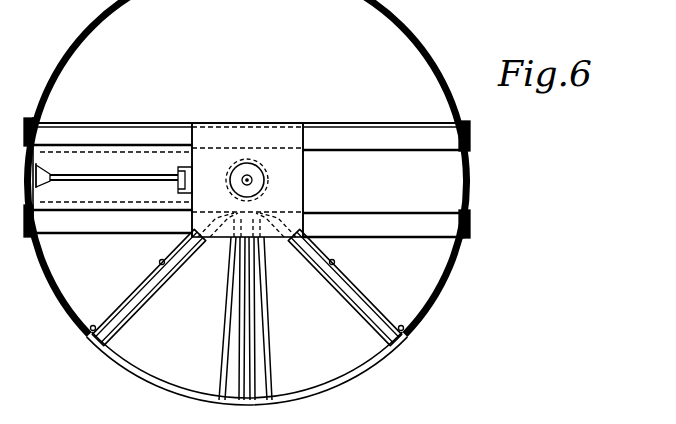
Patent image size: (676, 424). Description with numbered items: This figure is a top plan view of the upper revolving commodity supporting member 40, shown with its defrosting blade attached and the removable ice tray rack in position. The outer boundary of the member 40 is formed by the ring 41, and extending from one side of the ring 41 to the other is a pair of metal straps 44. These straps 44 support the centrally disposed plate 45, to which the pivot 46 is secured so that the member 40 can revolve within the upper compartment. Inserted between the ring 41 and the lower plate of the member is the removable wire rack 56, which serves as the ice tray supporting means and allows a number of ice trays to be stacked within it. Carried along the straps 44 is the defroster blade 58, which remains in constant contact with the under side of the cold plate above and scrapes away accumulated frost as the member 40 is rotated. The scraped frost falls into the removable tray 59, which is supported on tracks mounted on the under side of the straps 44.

The commodity supporting member 40 is at (472, 188).
The ring 41 is at (445, 287).
The metal straps 44 is at (160, 130).
The centrally disposed plate 45 is at (265, 133).
The pivot 46 is at (249, 178).
The removable wire rack 56 is at (268, 332).
The defroster blade 58 is at (67, 174).
The removable tray 59 is at (107, 153).